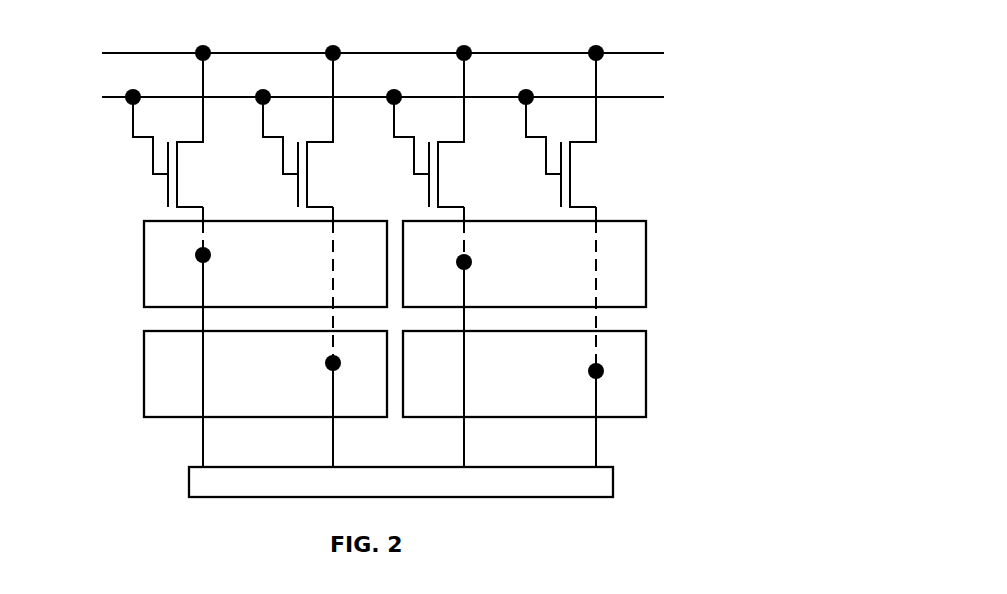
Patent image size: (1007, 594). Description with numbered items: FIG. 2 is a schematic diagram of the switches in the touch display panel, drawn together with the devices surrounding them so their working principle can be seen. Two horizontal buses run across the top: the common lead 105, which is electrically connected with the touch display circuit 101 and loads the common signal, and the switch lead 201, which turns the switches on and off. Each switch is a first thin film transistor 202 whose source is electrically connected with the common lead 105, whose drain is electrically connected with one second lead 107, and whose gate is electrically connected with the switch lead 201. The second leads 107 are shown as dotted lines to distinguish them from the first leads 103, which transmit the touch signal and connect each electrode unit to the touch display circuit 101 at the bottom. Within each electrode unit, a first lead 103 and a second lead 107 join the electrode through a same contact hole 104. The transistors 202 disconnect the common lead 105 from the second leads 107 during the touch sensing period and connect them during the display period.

The touch display circuit 101 is at (605, 478).
The first lead 103 is at (203, 453).
The contact hole 104 is at (198, 255).
The common lead 105 is at (232, 52).
The second lead 107 is at (600, 250).
The switch lead 201 is at (115, 98).
The first thin film transistor 202 is at (572, 184).